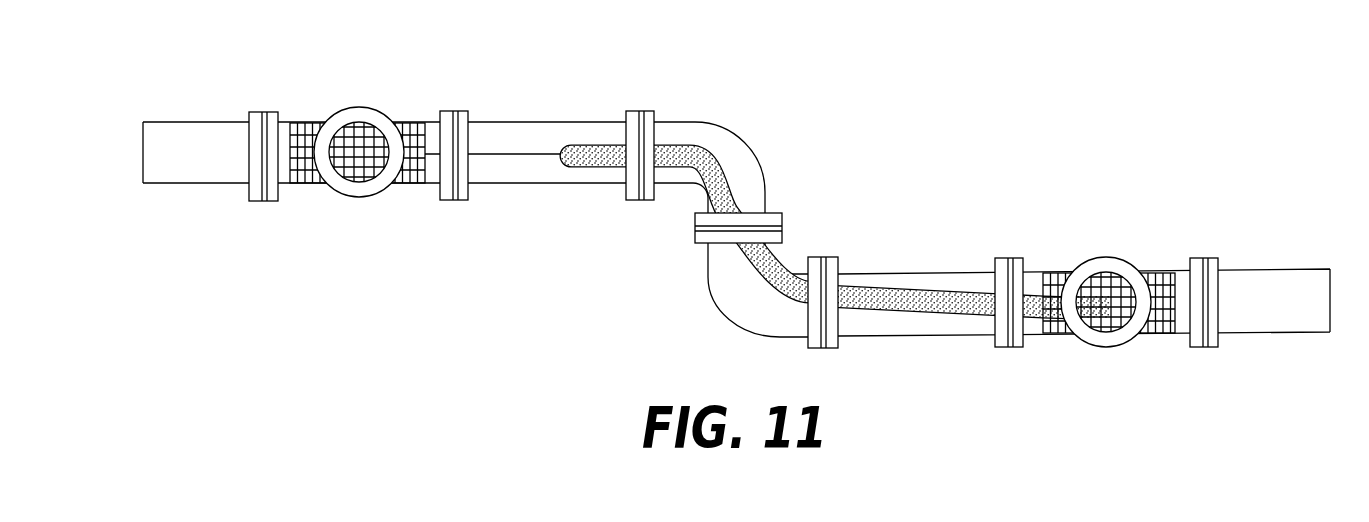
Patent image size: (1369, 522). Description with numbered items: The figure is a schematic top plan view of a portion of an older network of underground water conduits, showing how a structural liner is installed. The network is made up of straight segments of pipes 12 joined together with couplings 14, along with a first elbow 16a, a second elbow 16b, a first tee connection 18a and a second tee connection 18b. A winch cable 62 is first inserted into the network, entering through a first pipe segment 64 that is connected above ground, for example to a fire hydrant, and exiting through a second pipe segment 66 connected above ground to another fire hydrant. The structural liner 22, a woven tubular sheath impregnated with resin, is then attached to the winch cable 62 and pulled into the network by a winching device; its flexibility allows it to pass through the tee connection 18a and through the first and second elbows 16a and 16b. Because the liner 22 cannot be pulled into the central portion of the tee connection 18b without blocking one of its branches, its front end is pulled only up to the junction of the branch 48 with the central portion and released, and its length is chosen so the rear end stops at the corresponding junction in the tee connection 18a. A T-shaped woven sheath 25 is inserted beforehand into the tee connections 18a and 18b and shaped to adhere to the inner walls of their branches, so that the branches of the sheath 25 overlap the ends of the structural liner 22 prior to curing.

The pipes 12 is at (210, 185).
The couplings 14 is at (338, 118).
The first elbow 16a is at (738, 300).
The second elbow 16b is at (740, 152).
The first tee connection 18a is at (1118, 283).
The tee connection 18b is at (348, 134).
The structural liner 22 is at (937, 305).
The T-shaped woven sheath 25 is at (738, 189).
The branch 48 is at (413, 185).
The winch cable 62 is at (525, 157).
The first pipe segment 64 is at (1122, 340).
The second pipe segment 66 is at (352, 180).